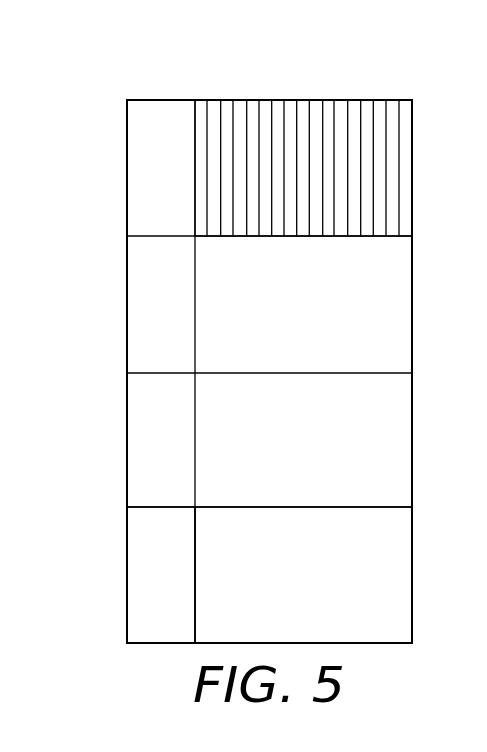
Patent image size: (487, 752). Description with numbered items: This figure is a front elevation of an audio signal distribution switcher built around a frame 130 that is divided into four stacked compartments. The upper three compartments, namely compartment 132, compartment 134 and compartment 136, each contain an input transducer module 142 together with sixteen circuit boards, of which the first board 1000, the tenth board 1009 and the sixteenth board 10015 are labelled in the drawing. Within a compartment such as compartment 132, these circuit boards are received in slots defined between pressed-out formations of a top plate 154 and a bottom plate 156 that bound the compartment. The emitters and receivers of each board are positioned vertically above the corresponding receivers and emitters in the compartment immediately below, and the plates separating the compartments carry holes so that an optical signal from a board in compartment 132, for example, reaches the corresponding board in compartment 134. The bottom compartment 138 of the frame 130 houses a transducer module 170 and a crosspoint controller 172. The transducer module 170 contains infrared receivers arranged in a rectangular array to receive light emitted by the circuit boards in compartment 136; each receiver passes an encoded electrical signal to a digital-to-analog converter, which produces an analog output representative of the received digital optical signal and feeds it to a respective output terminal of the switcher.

The frame 130 is at (266, 88).
The circuit board 1000 is at (214, 118).
The circuit board 1009 is at (325, 118).
The circuit board 10015 is at (401, 118).
The top plate 154 is at (161, 100).
The compartment 132 is at (137, 153).
The input transducer module 142 is at (143, 197).
The bottom plate 156 is at (240, 240).
The compartment 134 is at (397, 342).
The compartment 136 is at (393, 487).
The bottom compartment 138 is at (397, 565).
The transducer module 170 is at (323, 589).
The crosspoint controller 172 is at (184, 590).